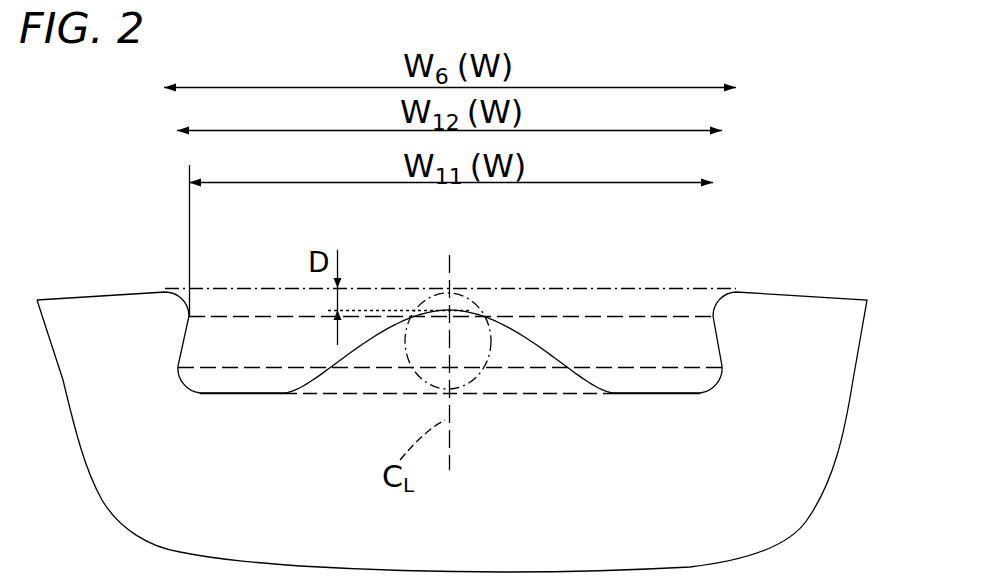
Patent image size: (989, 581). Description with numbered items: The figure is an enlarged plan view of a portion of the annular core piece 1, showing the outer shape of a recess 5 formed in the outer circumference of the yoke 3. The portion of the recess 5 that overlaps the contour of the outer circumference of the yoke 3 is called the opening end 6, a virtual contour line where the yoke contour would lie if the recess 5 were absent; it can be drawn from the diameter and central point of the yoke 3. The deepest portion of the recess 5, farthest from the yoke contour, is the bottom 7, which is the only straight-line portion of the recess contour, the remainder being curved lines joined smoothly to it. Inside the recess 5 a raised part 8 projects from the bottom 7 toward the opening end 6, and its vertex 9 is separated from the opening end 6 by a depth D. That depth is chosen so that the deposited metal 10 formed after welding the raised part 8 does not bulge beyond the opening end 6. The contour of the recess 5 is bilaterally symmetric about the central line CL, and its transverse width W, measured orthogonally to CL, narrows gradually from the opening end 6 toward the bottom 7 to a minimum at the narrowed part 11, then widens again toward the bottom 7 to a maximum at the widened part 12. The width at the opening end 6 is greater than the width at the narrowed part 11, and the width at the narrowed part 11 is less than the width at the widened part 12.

The annular core piece 1 is at (792, 178).
The yoke 3 is at (812, 320).
The recess 5 is at (598, 343).
The opening end 6 is at (637, 287).
The bottom 7 is at (248, 394).
The raised part 8 is at (520, 330).
The vertex 9 is at (462, 305).
The deposited metal 10 is at (415, 308).
The narrowed part 11 is at (233, 313).
The widened part 12 is at (310, 385).